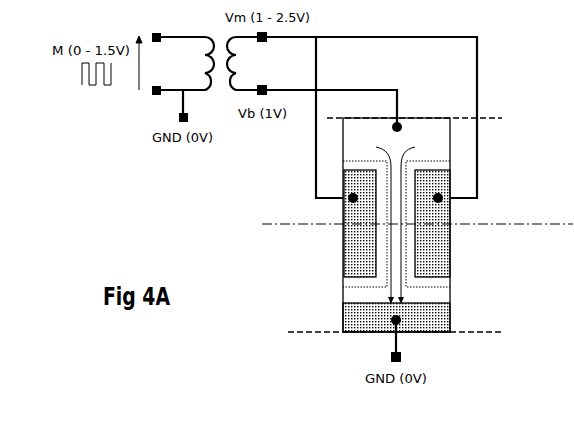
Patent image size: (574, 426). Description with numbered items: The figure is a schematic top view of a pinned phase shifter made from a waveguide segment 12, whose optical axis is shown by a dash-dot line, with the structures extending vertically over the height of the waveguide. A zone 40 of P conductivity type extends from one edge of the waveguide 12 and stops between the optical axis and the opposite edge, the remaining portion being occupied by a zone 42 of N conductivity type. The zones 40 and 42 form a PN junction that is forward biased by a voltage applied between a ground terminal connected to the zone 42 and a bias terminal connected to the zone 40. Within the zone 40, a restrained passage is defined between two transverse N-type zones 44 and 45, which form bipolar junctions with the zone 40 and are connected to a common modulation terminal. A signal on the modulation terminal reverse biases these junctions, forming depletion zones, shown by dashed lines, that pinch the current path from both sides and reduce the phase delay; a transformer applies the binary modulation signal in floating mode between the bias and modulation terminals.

The waveguide segment 12 is at (490, 118).
The zone of P conductivity type 40 is at (446, 135).
The zone of N conductivity type 42 is at (446, 320).
The transverse zone of N conductivity type 44 is at (366, 270).
The transverse zone of N conductivity type 45 is at (440, 270).